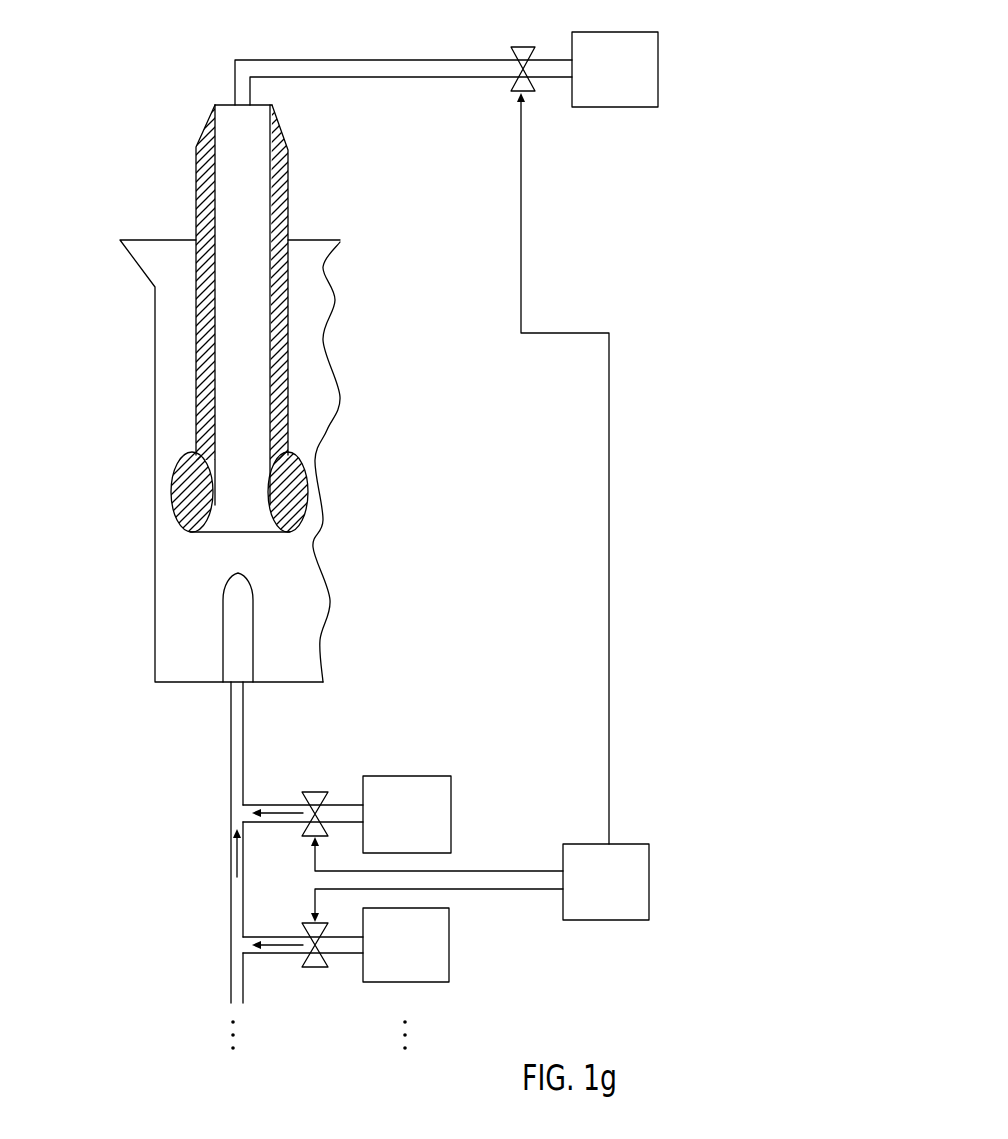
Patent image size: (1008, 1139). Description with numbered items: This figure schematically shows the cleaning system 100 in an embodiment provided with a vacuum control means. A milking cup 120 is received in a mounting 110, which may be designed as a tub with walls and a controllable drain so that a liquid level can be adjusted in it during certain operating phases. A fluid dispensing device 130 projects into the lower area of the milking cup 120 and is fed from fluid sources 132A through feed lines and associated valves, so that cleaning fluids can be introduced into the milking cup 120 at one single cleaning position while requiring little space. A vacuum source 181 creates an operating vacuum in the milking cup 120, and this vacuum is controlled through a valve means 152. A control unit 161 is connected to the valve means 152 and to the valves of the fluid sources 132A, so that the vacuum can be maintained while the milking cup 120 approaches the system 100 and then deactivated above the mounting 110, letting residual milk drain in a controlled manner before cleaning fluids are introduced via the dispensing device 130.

The cleaning system 100 is at (86, 230).
The mounting 110 is at (155, 656).
The milking cup 120 is at (304, 172).
The fluid dispensing device 130 is at (270, 648).
The fluid source 132A is at (383, 828).
The valve means 152 is at (512, 48).
The controller 161 is at (589, 896).
The vacuum source 181 is at (598, 85).